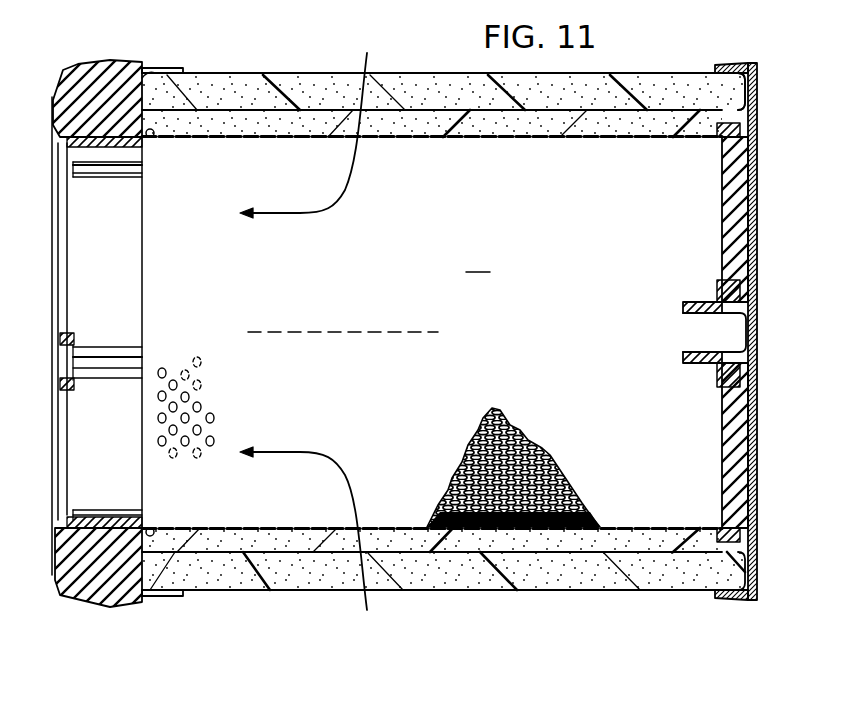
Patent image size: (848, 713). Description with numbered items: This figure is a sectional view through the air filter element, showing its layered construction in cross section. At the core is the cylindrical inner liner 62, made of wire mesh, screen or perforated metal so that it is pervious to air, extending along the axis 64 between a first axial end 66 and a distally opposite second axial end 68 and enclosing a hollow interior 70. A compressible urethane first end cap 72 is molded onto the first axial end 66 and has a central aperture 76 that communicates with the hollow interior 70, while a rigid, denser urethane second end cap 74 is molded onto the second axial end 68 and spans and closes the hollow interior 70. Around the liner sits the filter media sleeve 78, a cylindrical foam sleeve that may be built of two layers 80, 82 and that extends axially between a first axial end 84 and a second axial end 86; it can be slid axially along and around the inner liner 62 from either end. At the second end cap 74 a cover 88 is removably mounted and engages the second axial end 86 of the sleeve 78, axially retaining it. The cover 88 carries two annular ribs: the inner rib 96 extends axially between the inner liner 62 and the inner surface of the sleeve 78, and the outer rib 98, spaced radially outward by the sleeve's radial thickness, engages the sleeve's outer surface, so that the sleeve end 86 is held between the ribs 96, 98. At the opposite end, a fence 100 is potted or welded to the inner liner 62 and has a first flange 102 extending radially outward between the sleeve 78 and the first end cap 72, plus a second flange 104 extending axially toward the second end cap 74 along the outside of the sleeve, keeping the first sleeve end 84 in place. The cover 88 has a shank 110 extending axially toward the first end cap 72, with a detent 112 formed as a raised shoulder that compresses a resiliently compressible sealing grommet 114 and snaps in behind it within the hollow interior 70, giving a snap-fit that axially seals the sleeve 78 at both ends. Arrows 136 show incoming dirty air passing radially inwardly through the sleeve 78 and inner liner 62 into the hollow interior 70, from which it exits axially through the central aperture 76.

The inner liner 62 is at (487, 140).
The axis 64 is at (345, 332).
The first axial end 66 is at (62, 135).
The second axial end 68 is at (757, 143).
The hollow interior 70 is at (477, 260).
The first end cap 72 is at (105, 78).
The second end cap 74 is at (725, 221).
The central aperture 76 is at (100, 148).
The filter media sleeve 78 is at (460, 73).
The first foam layer 80 is at (427, 93).
The second foam layer 82 is at (388, 120).
The first axial end of sleeve 84 is at (145, 97).
The second axial end of sleeve 86 is at (742, 97).
The cover 88 is at (757, 447).
The inner annular rib 96 is at (717, 124).
The outer annular rib 98 is at (720, 67).
The fence 100 is at (147, 70).
The first flange 102 is at (152, 130).
The second flange 104 is at (163, 67).
The shank 110 is at (737, 306).
The detent 112 is at (715, 300).
The sealing grommet 114 is at (717, 376).
The air flow arrows 136 is at (343, 195).